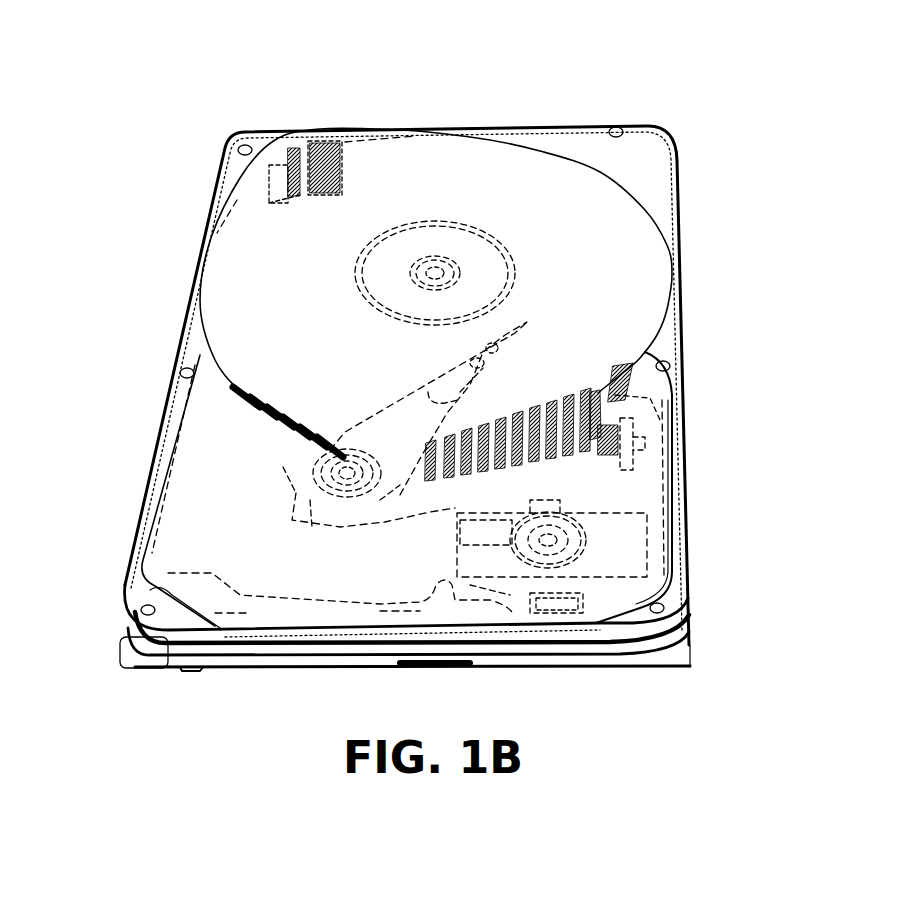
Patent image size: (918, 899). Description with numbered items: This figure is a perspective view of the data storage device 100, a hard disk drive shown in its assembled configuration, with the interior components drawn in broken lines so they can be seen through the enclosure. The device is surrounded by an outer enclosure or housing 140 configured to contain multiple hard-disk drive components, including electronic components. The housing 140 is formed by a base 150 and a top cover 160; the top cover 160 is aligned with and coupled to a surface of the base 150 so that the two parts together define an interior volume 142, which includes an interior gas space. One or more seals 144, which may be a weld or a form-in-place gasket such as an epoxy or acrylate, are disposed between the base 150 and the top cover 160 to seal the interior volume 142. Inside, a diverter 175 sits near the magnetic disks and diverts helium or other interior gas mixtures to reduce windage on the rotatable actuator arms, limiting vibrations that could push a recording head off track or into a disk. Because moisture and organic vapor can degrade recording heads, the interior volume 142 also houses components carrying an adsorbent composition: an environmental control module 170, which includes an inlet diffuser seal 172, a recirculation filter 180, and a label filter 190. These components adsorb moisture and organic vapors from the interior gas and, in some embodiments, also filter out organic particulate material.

The data storage device 100 is at (241, 65).
The housing 140 is at (697, 667).
The interior volume 142 is at (612, 493).
The seal 144 is at (680, 213).
The base 150 is at (127, 642).
The top cover 160 is at (453, 198).
The environmental control module 170 is at (634, 558).
The inlet diffuser seal 172 is at (520, 558).
The diverter 175 is at (315, 142).
The recirculation filter 180 is at (278, 167).
The label filter 190 is at (548, 606).